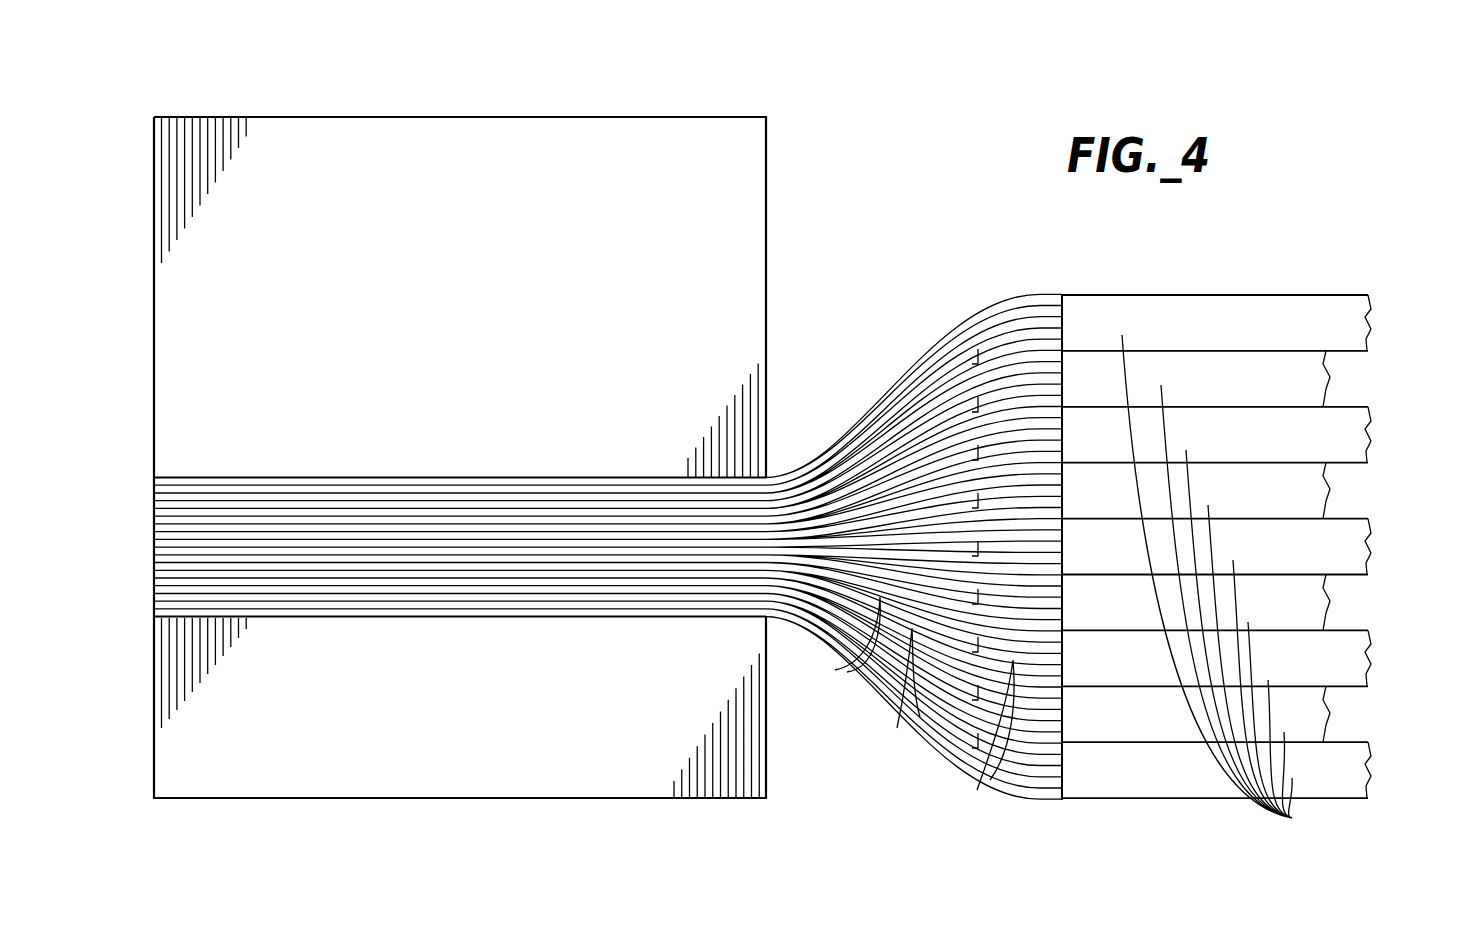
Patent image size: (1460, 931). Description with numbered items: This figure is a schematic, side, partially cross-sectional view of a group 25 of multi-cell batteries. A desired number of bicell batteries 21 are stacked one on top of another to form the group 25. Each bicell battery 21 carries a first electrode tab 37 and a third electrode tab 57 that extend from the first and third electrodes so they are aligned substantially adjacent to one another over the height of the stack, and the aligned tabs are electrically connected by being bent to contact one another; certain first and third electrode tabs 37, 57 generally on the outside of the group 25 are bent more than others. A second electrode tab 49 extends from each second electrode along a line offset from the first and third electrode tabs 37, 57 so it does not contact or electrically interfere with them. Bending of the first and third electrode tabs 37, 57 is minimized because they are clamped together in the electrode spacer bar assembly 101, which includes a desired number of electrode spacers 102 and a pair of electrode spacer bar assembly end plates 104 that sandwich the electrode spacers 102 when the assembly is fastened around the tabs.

The electrode spacer bar assembly 101 is at (392, 90).
The electrode spacers 102 is at (763, 225).
The electrode spacer bar assembly end plates 104 is at (242, 788).
The group of bicell batteries 25 is at (1382, 297).
The bicell battery 21 is at (1292, 818).
The third electrode tab 57 is at (847, 672).
The first electrode tab 37 is at (897, 728).
The second electrode tab 49 is at (977, 790).